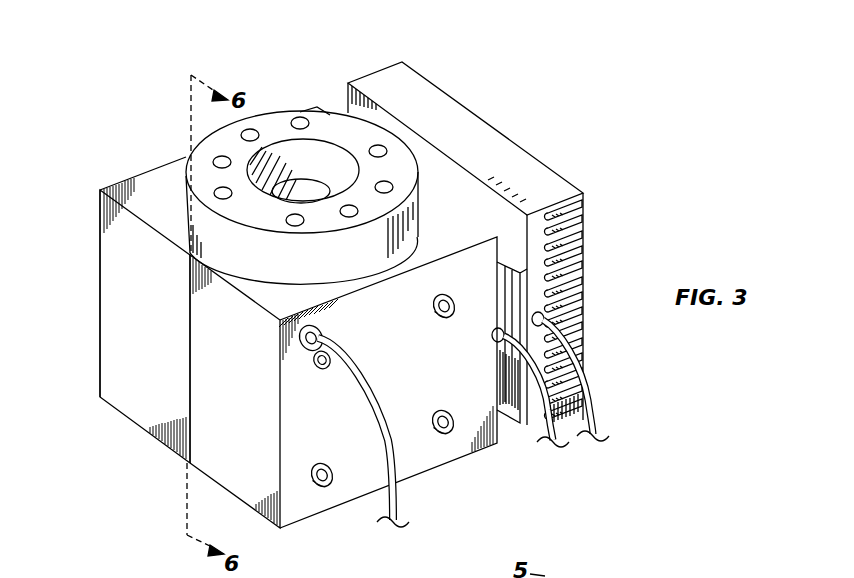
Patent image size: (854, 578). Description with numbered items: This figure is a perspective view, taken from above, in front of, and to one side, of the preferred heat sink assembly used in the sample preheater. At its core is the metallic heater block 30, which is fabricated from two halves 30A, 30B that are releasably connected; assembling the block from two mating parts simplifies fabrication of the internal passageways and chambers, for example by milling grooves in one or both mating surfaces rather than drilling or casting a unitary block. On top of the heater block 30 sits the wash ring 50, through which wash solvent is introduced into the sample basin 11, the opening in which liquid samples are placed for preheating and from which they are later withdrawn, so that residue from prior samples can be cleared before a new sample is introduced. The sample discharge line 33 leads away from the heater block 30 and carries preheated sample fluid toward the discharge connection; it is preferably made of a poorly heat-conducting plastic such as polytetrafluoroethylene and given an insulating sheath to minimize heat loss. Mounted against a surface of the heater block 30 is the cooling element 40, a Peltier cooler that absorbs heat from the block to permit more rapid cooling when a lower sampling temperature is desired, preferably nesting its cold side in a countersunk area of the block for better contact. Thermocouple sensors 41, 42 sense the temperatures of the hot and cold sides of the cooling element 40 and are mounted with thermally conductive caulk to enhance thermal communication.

The sample basin 11 is at (305, 182).
The heater block 30 is at (118, 300).
The heater block half 30A is at (110, 368).
The heater block half 30B is at (235, 475).
The sample discharge line 33 is at (362, 364).
The cooling element 40 is at (488, 243).
The thermocouple sensor 41 is at (583, 290).
The thermocouple sensor 42 is at (494, 337).
The wash ring 50 is at (281, 116).